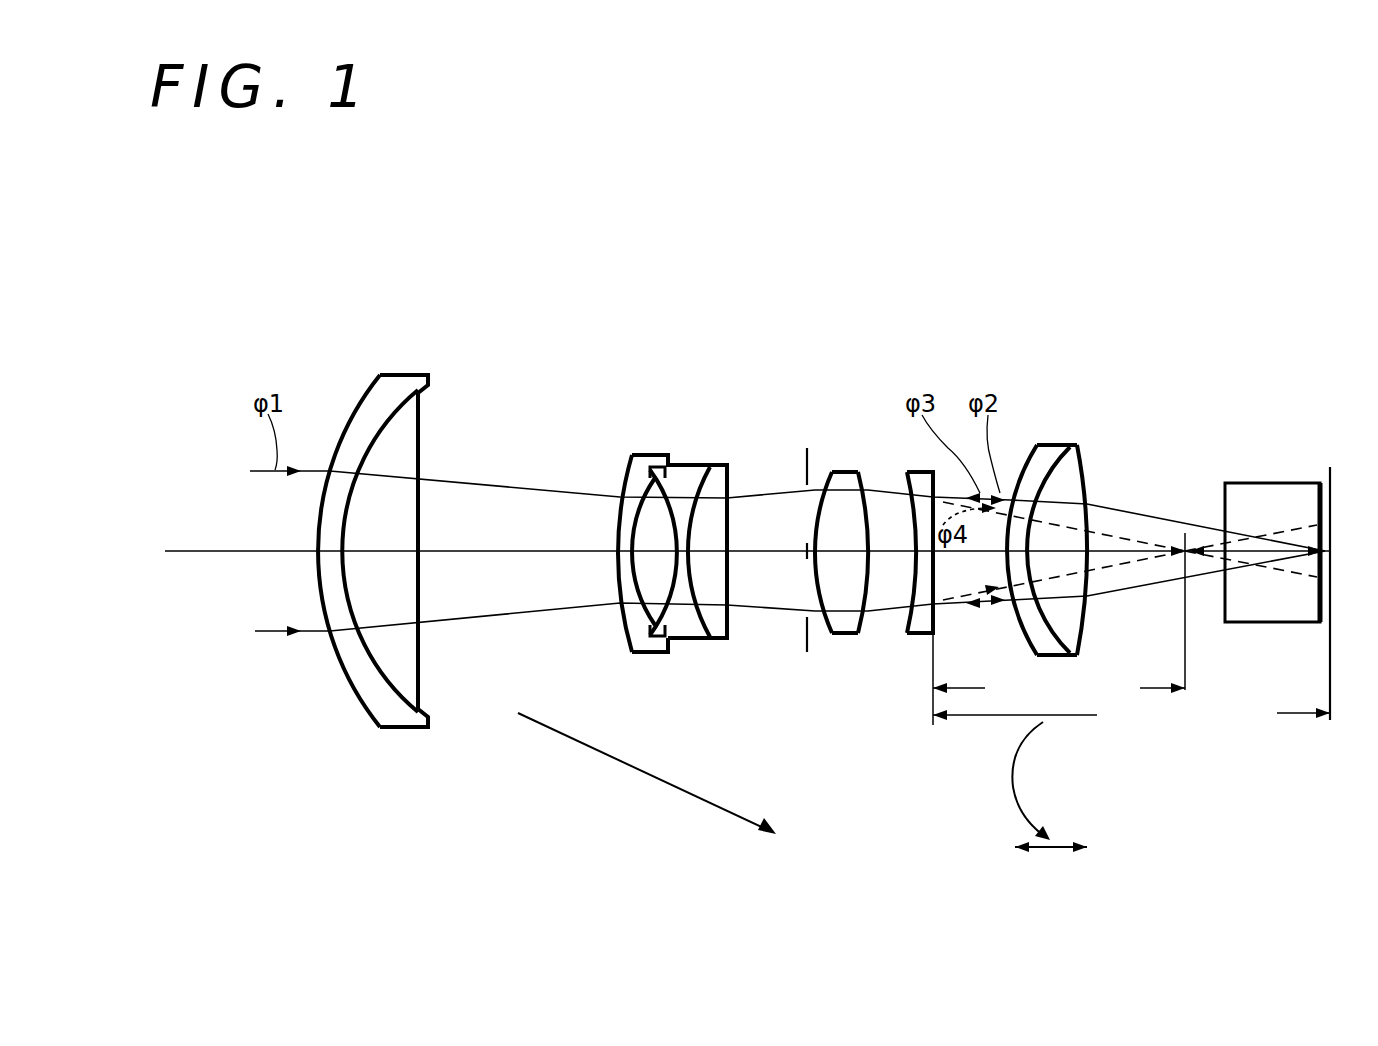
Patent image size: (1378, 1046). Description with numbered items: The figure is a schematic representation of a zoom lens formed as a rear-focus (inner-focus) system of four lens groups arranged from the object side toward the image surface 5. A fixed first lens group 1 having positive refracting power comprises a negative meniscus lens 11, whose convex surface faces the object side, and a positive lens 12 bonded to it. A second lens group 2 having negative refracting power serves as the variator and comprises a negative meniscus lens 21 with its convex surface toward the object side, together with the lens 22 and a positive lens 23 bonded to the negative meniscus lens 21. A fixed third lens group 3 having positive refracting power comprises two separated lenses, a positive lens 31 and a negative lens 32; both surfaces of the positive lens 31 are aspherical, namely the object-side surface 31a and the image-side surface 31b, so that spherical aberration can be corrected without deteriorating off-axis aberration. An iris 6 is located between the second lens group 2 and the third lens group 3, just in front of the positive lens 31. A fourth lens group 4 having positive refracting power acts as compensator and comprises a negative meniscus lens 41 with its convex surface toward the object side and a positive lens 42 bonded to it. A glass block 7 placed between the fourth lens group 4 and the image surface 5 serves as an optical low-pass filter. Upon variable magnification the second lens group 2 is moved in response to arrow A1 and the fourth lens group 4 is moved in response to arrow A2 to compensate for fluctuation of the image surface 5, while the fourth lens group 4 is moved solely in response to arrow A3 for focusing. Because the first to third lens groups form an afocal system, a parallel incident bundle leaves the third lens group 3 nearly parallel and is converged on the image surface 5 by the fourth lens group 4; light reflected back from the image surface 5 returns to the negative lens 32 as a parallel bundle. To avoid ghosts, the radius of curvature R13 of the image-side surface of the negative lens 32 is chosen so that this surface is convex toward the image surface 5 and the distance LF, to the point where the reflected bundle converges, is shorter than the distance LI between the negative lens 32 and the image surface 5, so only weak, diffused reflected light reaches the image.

The first lens group 1 is at (415, 498).
The negative meniscus lens 11 is at (415, 382).
The positive lens 12 is at (413, 427).
The second lens group 2 is at (692, 458).
The negative meniscus lens 21 is at (633, 455).
The lens of second group 22 is at (678, 477).
The positive lens 23 is at (697, 491).
The third lens group 3 is at (849, 485).
The positive lens 31 is at (825, 485).
The surface 31a is at (813, 572).
The surface 31b is at (867, 572).
The negative lens 32 is at (917, 477).
The fourth lens group 4 is at (1068, 459).
The negative meniscus lens 41 is at (1045, 453).
The positive lens 42 is at (1068, 462).
The image surface 5 is at (1330, 467).
The iris 6 is at (803, 472).
The glass block 7 is at (1250, 490).
The radius of curvature R13 is at (938, 611).
The distance to convergence point LF is at (1059, 679).
The distance to image surface LI is at (1241, 633).
The arrow A1 is at (622, 762).
The arrow A2 is at (1013, 783).
The arrow A3 is at (1050, 848).